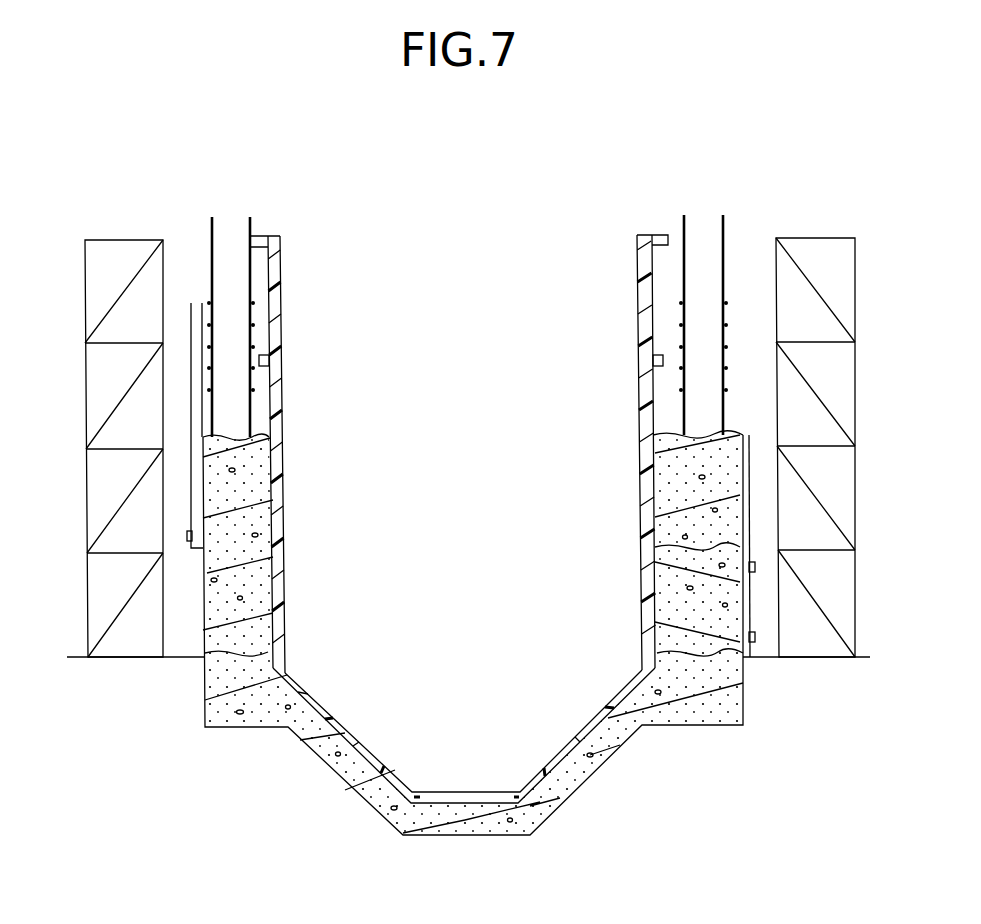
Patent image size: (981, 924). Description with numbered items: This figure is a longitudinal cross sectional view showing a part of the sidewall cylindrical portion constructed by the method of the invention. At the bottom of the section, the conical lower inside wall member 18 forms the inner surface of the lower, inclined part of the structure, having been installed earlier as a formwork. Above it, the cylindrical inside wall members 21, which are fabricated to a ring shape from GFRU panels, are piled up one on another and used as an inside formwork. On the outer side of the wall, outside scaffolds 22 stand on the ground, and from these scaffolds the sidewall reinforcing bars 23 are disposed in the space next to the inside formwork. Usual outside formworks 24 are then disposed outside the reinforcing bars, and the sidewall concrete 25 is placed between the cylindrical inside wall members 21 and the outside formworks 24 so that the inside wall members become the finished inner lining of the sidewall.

The conical lower inside wall member 18 is at (347, 730).
The cylindrical inside wall members 21 is at (286, 405).
The outside scaffolds 22 is at (86, 410).
The sidewall reinforcing bars 23 is at (250, 238).
The outside formworks 24 is at (192, 477).
The sidewall concrete 25 is at (660, 493).